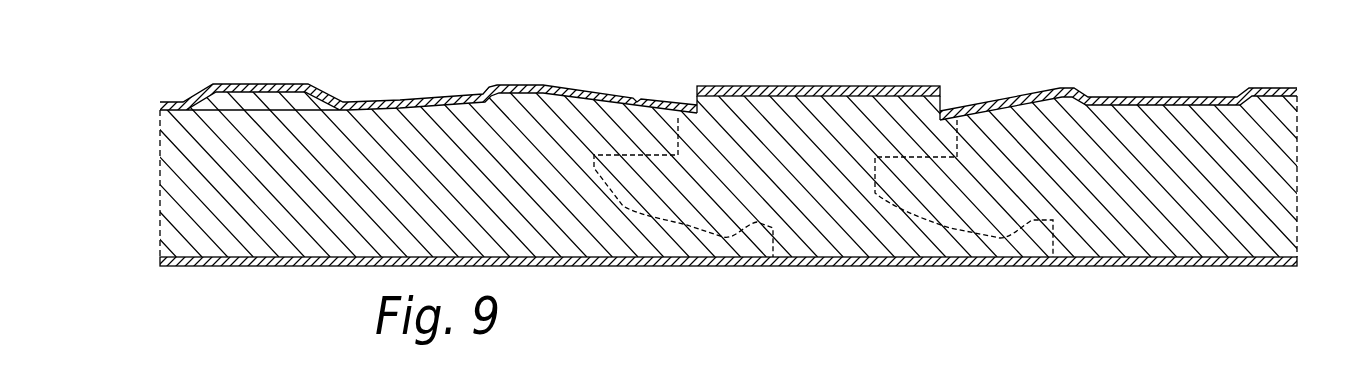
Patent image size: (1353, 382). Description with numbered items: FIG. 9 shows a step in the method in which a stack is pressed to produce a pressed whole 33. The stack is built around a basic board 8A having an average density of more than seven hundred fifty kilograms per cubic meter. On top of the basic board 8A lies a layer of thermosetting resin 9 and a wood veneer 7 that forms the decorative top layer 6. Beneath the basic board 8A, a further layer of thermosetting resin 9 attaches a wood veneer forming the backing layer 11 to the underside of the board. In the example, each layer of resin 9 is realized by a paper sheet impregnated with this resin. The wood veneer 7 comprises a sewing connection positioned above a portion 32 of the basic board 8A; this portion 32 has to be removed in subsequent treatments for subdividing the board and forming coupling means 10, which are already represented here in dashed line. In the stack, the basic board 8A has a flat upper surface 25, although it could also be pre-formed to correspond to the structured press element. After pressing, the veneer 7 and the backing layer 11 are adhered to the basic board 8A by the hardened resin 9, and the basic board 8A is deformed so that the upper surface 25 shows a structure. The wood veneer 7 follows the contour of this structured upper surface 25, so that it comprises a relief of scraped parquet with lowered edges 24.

The decorative top layer 6 is at (300, 83).
The wood veneer 7 is at (1297, 94).
The basic board 8A is at (182, 192).
The layer of thermosetting resin 9 is at (160, 111).
The coupling means 10 is at (640, 178).
The backing layer 11 is at (312, 266).
The lowered edges 24 is at (664, 104).
The upper surface 25 is at (548, 92).
The portion of the basic board 32 is at (780, 178).
The pressed whole 33 is at (1145, 70).